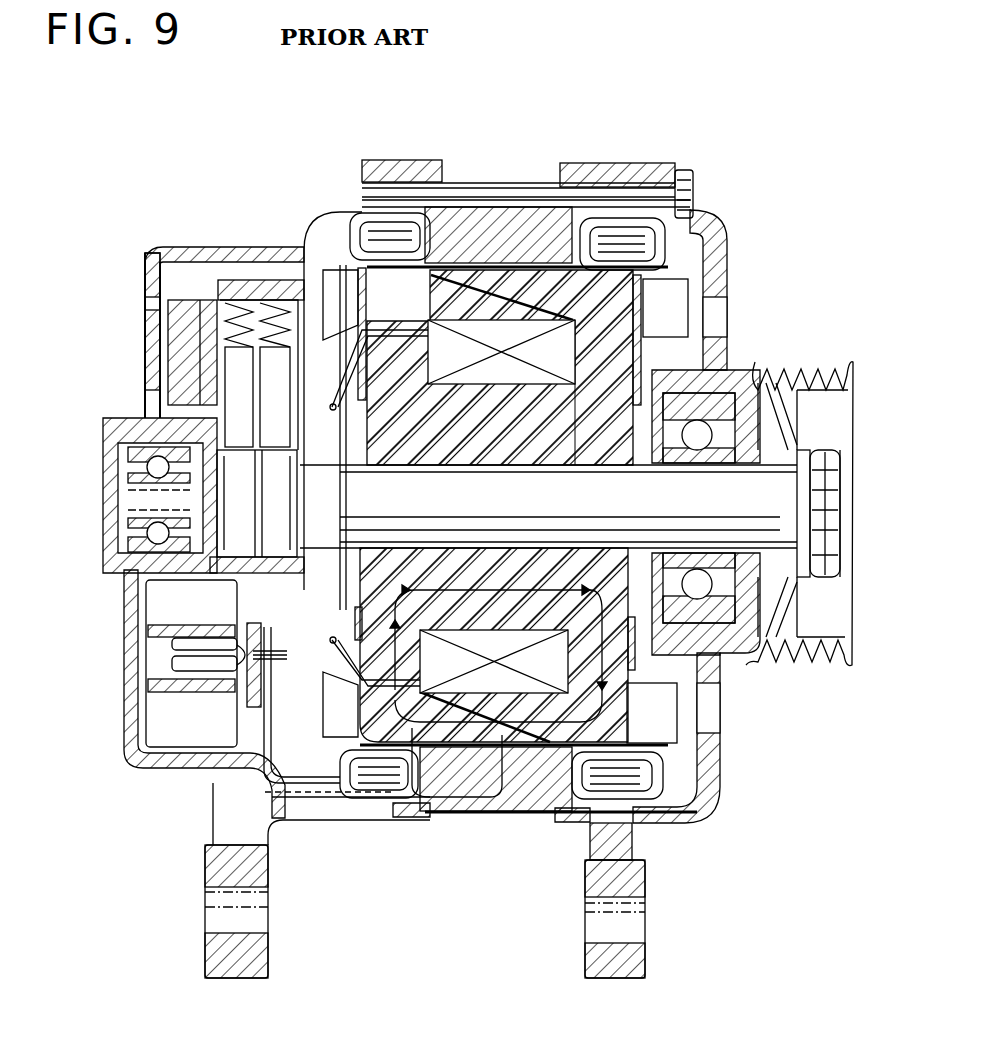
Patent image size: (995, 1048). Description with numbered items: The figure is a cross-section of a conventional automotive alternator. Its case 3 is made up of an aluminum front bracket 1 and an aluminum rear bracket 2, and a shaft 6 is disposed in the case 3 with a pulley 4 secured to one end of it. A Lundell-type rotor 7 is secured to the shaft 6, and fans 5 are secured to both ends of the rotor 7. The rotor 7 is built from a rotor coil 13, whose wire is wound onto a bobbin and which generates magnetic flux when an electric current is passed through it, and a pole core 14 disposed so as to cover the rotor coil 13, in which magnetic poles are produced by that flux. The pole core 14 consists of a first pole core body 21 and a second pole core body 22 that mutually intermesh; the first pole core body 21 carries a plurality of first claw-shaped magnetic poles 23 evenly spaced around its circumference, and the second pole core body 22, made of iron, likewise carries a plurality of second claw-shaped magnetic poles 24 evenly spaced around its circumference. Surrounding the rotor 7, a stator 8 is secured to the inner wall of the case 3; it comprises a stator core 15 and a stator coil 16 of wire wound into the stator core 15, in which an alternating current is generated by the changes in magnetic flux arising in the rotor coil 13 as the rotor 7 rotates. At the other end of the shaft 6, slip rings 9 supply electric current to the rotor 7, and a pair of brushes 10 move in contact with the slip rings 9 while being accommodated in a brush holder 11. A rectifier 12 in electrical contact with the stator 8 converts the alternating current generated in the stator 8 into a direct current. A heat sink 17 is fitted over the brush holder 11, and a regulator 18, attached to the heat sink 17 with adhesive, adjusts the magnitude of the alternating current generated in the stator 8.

The front bracket 1 is at (728, 348).
The rear bracket 2 is at (118, 432).
The case 3 is at (566, 824).
The pulley 4 is at (832, 667).
The fans 5 is at (340, 275).
The shaft 6 is at (780, 522).
The rotor 7 is at (668, 233).
The stator 8 is at (445, 815).
The slip rings 9 is at (225, 497).
The brushes 10 is at (237, 372).
The brush holder 11 is at (245, 283).
The rectifier 12 is at (178, 735).
The rotor coil 13 is at (492, 345).
The pole core 14 is at (528, 278).
The stator core 15 is at (476, 215).
The stator coil 16 is at (355, 775).
The heat sink 17 is at (170, 296).
The regulator 18 is at (207, 305).
The first pole core body 21 is at (597, 302).
The second pole core body 22 is at (390, 282).
The first claw-shaped magnetic poles 23 is at (495, 737).
The second claw-shaped magnetic poles 24 is at (405, 815).